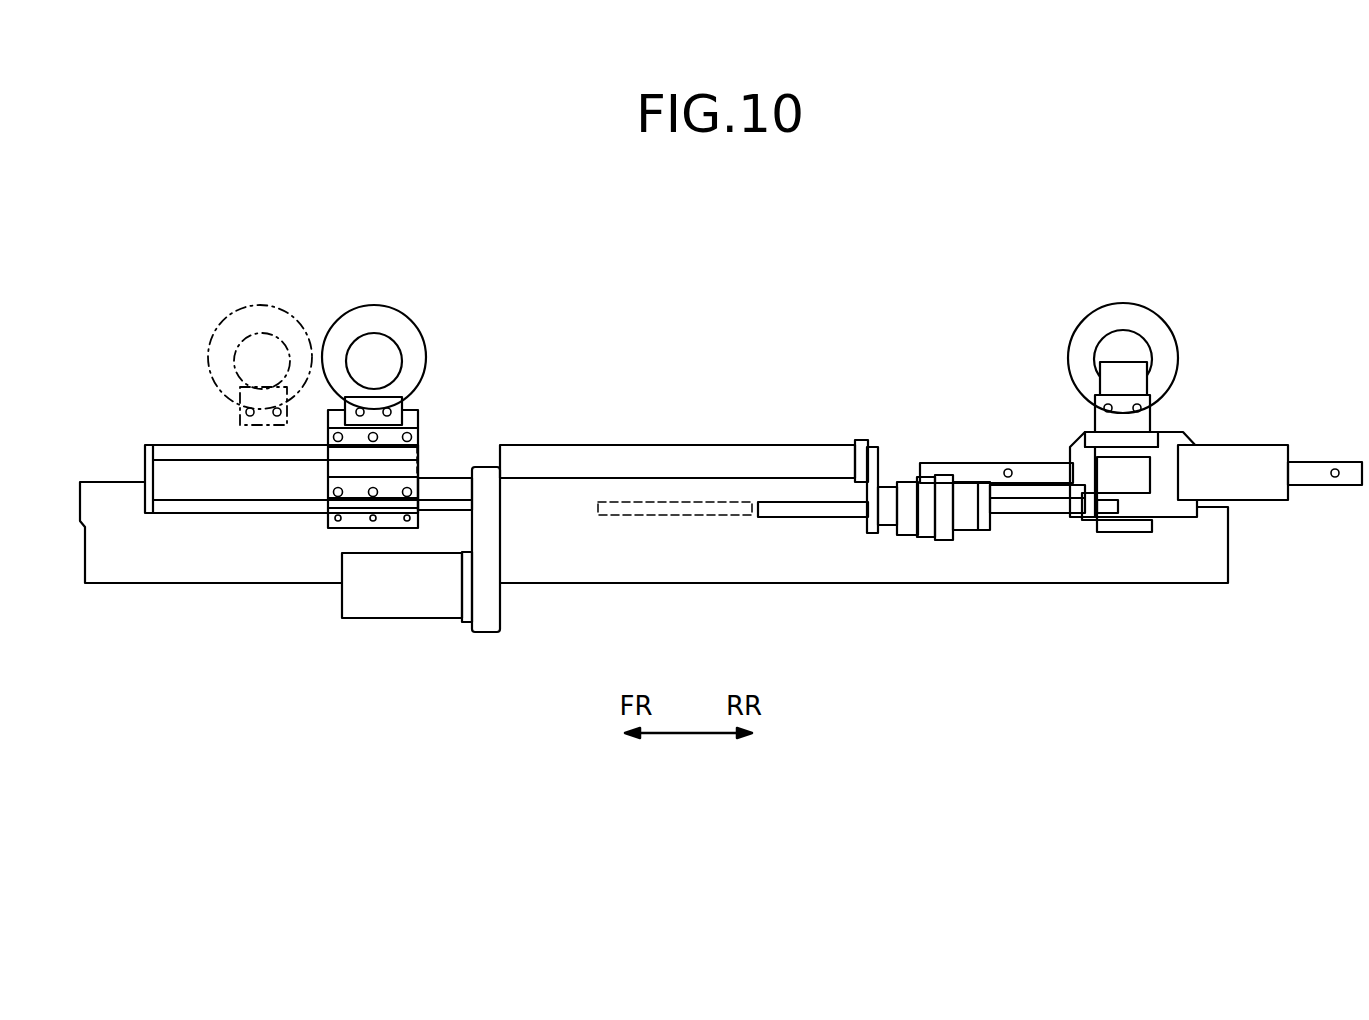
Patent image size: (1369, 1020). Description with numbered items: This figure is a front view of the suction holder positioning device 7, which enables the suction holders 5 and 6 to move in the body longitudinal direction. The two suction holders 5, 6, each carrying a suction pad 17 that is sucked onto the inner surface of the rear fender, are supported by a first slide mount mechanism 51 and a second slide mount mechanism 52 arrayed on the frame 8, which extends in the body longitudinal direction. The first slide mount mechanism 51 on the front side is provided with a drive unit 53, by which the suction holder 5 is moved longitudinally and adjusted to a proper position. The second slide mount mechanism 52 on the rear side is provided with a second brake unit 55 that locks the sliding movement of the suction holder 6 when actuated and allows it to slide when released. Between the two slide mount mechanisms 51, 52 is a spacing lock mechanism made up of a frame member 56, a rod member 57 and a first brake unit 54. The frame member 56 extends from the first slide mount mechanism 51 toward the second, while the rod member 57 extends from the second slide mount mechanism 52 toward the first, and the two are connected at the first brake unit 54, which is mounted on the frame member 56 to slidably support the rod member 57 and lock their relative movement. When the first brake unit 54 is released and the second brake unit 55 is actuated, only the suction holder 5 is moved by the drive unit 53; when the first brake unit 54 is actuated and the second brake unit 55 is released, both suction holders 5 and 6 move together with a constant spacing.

The suction holder 5 is at (421, 306).
The suction holder 6 is at (1172, 296).
The suction holder positioning device 7 is at (801, 397).
The frame 8 is at (107, 495).
The suction pad 17 is at (370, 317).
The first slide mount mechanism 51 is at (204, 532).
The second slide mount mechanism 52 is at (1319, 450).
The drive unit 53 is at (389, 630).
The first brake unit 54 is at (927, 556).
The second brake unit 55 is at (1235, 430).
The frame member 56 is at (707, 457).
The rod member 57 is at (1033, 515).